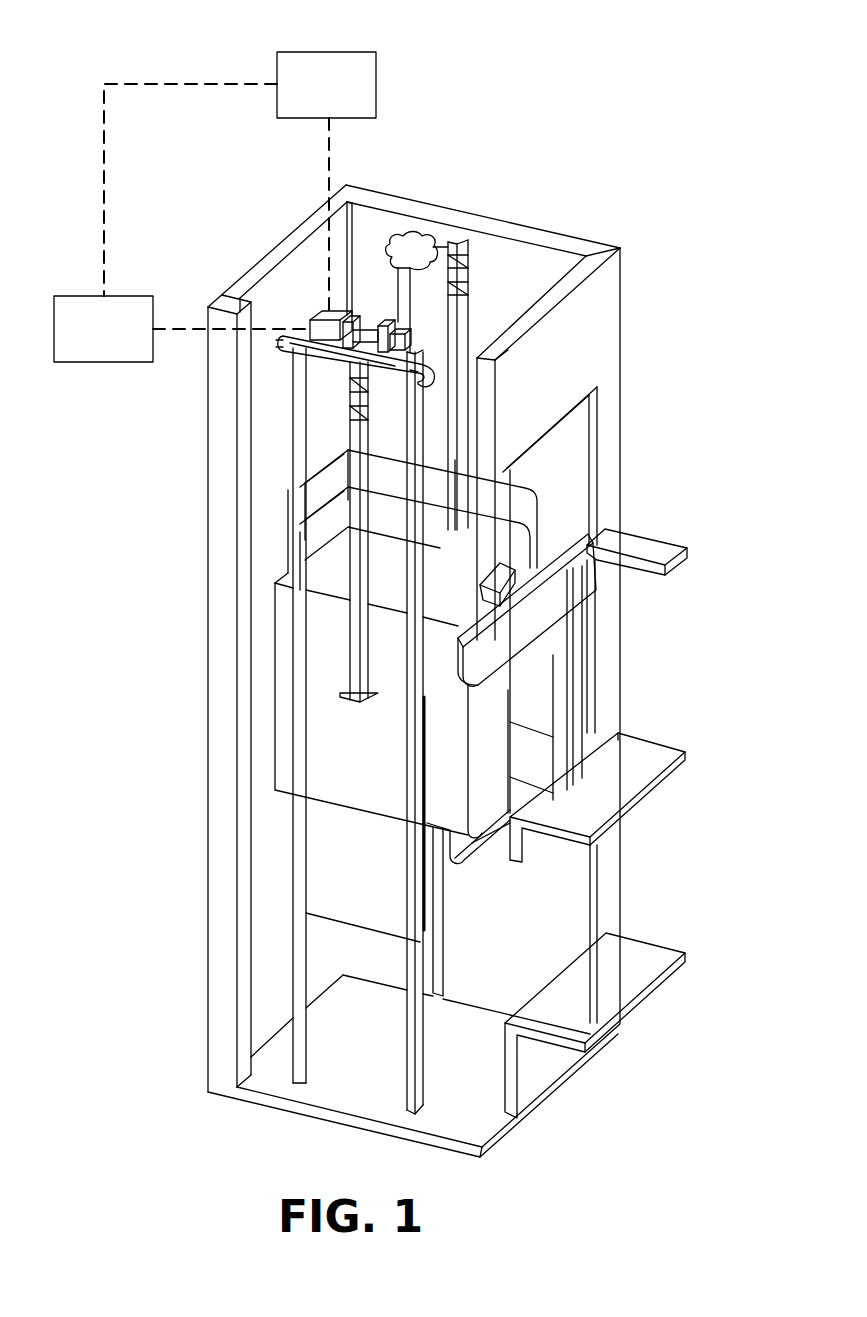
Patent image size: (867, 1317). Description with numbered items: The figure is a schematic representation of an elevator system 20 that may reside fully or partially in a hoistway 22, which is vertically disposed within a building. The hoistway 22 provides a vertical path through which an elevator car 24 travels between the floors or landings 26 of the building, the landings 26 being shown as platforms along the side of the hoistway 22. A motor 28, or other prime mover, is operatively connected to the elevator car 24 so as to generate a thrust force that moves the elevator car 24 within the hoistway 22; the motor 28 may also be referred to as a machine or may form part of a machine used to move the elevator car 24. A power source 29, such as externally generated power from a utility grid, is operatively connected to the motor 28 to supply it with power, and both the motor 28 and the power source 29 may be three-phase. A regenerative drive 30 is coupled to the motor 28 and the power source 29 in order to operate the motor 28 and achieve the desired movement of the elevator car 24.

The elevator system 20 is at (723, 72).
The hoistway 22 is at (517, 265).
The elevator car 24 is at (558, 664).
The landings 26 is at (655, 548).
The motor 28 is at (318, 312).
The power source 29 is at (240, 185).
The regenerative drive 30 is at (183, 329).